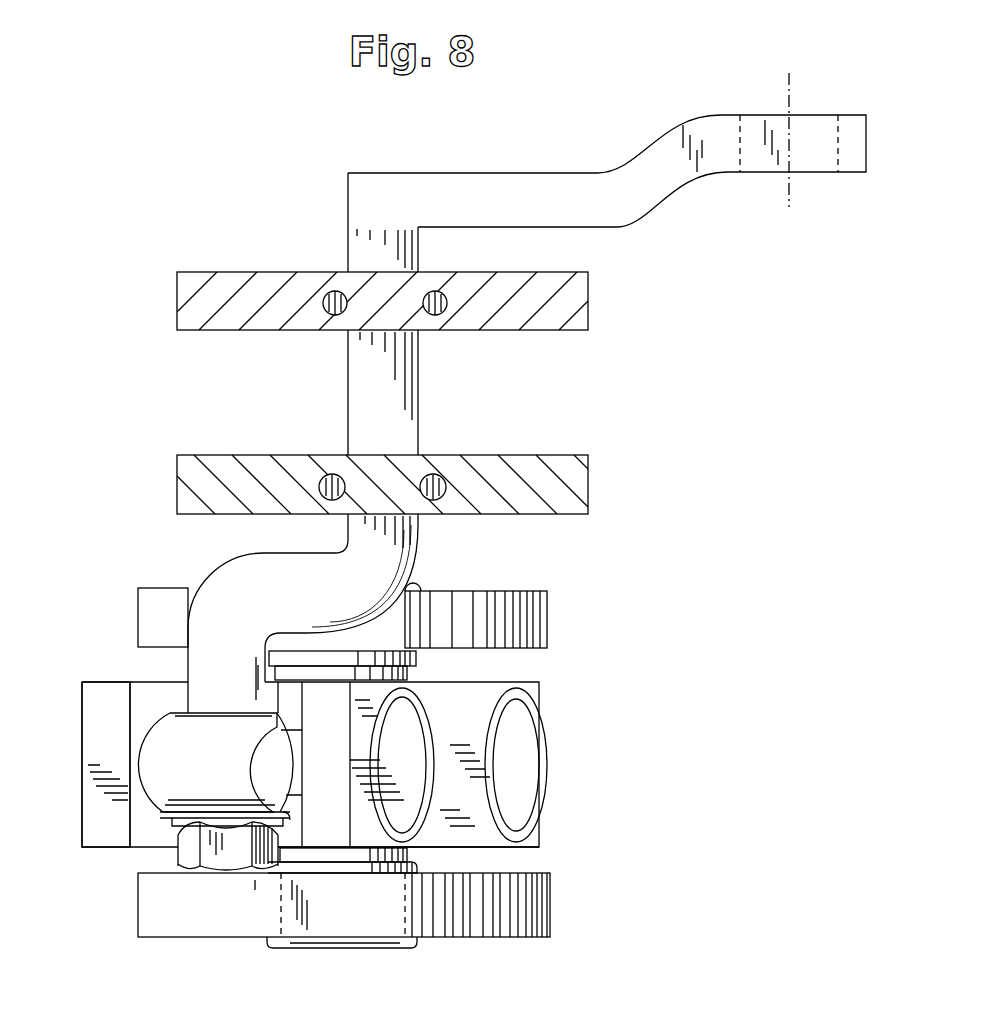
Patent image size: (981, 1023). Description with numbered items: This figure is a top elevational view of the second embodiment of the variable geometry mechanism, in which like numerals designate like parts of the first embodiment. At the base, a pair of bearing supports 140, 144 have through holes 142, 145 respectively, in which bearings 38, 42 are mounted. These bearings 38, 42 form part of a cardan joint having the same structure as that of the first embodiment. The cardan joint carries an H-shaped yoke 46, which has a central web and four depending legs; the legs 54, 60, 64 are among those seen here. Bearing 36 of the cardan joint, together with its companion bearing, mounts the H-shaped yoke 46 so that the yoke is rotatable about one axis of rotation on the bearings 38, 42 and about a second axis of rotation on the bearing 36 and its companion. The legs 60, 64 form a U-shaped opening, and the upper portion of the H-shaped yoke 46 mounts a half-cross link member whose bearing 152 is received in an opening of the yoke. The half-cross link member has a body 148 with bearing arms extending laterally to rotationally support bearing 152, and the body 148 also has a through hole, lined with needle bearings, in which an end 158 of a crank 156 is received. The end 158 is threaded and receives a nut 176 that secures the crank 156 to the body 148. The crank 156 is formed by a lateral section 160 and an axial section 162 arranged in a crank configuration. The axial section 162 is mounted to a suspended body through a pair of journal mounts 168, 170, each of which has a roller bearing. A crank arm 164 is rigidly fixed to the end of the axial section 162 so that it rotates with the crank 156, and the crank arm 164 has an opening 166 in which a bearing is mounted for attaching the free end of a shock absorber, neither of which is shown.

The crank arm 164 is at (530, 195).
The opening 166 is at (845, 130).
The journal mount 170 is at (578, 298).
The axial section 162 is at (360, 388).
The journal mount 168 is at (578, 490).
The crank 156 is at (205, 572).
The lateral section 160 is at (305, 588).
The bearing support 144 is at (547, 620).
The bearing 42 is at (430, 620).
The through hole 145 is at (407, 630).
The H-shaped yoke 46 is at (565, 674).
The leg 54 is at (500, 838).
The leg 64 is at (325, 825).
The leg 60 is at (95, 717).
The end of crank 158 is at (202, 663).
The body 148 is at (185, 778).
The nut 176 is at (235, 843).
The bearing support 140 is at (528, 908).
The through hole 142 is at (405, 907).
The bearing 38 is at (352, 937).
The bearing 152 is at (398, 735).
The bearing 36 is at (523, 773).